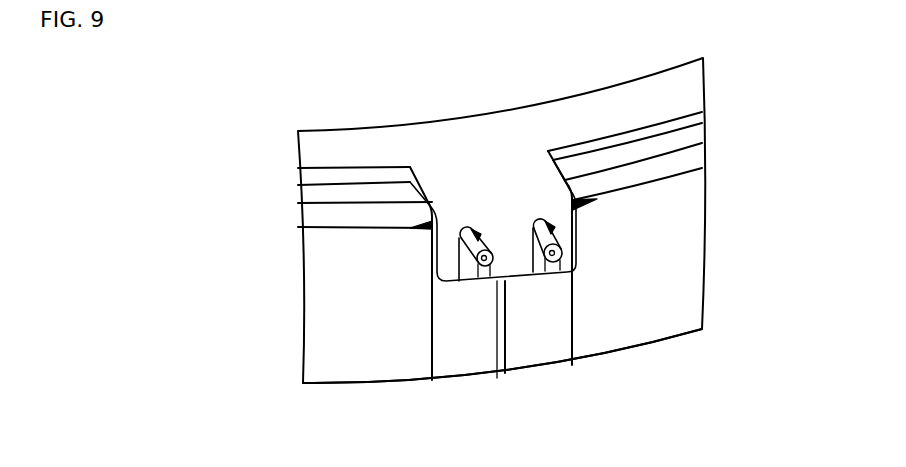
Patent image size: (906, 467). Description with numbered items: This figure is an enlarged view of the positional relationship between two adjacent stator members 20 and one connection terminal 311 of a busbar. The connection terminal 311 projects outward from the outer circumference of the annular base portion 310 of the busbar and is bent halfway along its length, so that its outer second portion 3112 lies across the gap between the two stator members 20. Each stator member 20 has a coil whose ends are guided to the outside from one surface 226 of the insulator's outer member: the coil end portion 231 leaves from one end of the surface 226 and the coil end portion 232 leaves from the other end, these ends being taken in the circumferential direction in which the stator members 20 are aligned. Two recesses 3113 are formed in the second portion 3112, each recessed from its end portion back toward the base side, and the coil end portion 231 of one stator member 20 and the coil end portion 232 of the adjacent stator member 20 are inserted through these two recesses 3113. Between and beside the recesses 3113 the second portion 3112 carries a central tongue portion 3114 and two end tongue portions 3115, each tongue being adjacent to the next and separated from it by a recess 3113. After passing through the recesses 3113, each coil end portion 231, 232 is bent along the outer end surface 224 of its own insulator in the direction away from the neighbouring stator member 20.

The base portion 310 is at (653, 88).
The connection terminal 311 is at (487, 182).
The surface 226 is at (690, 158).
The second portion 3112 is at (565, 228).
The tongue portion 3115 is at (576, 252).
The stator member 20 is at (688, 293).
The outer end surface 224 is at (660, 328).
The tongue portion 3114 is at (515, 247).
The coil end portion 231 is at (483, 270).
The coil end portion 232 is at (550, 262).
The recess 3113 is at (537, 275).